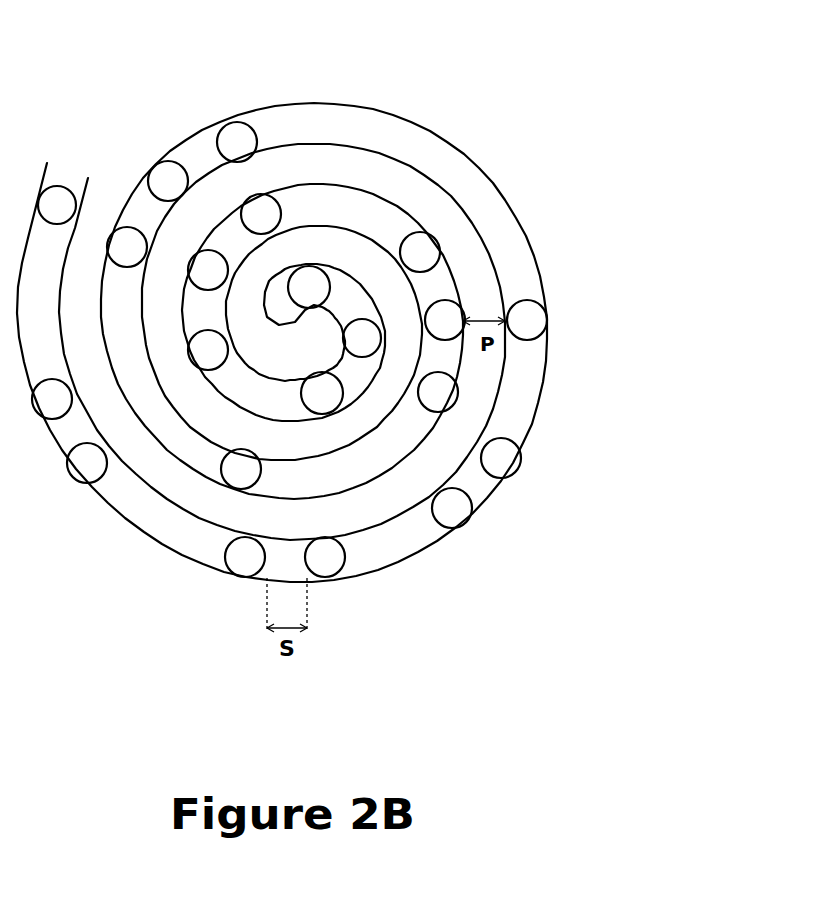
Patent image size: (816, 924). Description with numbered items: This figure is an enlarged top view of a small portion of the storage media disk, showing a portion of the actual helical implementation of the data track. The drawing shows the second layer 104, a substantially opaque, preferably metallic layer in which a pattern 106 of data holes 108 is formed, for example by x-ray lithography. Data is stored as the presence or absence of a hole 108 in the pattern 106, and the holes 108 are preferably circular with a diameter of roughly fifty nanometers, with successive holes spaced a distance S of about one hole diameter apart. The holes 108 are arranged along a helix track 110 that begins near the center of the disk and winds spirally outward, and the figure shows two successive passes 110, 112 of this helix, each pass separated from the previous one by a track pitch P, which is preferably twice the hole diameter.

The second layer 104 is at (467, 247).
The pattern 106 is at (548, 320).
The holes 108 is at (258, 140).
The helix track 110 is at (302, 328).
The successive pass of the helix track 112 is at (343, 328).